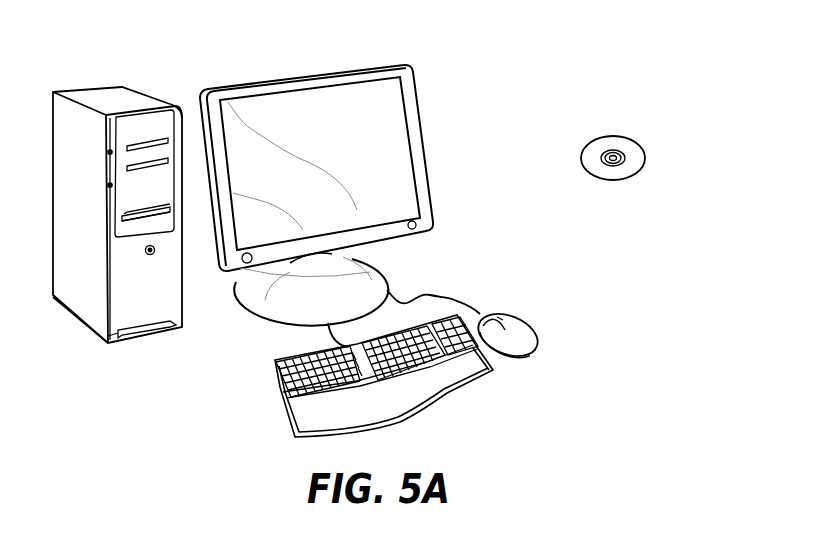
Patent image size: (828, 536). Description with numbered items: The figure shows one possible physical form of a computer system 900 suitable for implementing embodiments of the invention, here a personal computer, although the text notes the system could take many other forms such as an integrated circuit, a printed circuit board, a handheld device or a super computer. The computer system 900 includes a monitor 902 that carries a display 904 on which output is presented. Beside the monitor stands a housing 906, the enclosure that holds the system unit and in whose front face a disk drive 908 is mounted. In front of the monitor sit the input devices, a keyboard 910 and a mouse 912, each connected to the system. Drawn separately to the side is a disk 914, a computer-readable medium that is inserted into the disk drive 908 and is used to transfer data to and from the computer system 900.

The computer system 900 is at (545, 45).
The monitor 902 is at (427, 167).
The display 904 is at (383, 103).
The housing 906 is at (102, 95).
The disk drive 908 is at (158, 212).
The keyboard 910 is at (287, 403).
The mouse 912 is at (528, 328).
The disk 914 is at (627, 137).